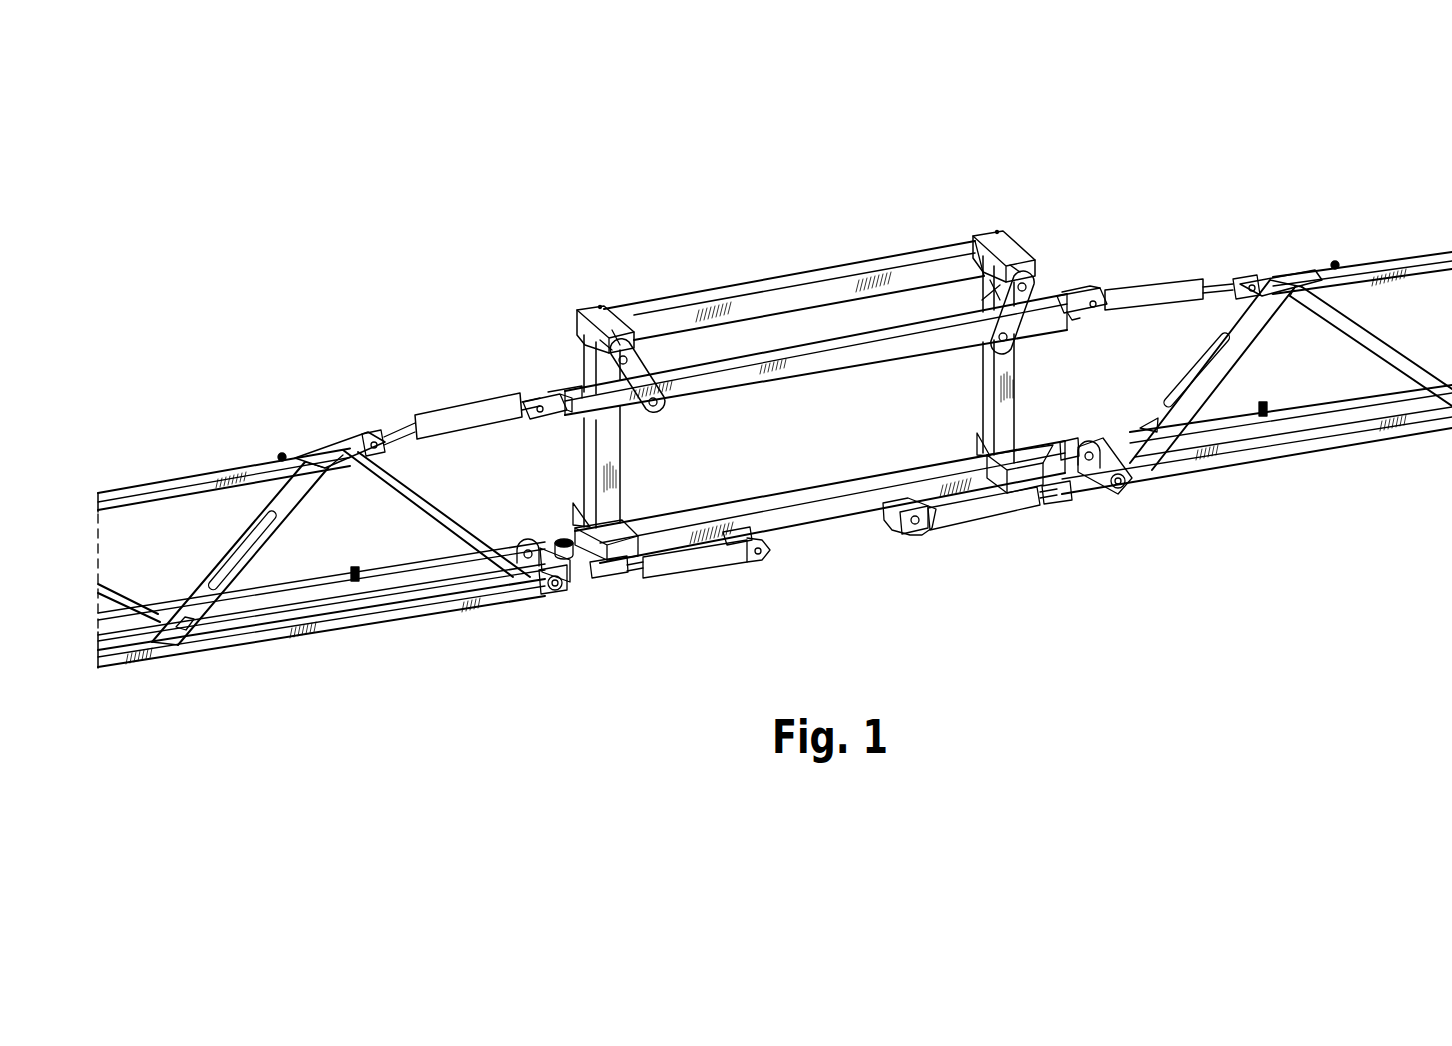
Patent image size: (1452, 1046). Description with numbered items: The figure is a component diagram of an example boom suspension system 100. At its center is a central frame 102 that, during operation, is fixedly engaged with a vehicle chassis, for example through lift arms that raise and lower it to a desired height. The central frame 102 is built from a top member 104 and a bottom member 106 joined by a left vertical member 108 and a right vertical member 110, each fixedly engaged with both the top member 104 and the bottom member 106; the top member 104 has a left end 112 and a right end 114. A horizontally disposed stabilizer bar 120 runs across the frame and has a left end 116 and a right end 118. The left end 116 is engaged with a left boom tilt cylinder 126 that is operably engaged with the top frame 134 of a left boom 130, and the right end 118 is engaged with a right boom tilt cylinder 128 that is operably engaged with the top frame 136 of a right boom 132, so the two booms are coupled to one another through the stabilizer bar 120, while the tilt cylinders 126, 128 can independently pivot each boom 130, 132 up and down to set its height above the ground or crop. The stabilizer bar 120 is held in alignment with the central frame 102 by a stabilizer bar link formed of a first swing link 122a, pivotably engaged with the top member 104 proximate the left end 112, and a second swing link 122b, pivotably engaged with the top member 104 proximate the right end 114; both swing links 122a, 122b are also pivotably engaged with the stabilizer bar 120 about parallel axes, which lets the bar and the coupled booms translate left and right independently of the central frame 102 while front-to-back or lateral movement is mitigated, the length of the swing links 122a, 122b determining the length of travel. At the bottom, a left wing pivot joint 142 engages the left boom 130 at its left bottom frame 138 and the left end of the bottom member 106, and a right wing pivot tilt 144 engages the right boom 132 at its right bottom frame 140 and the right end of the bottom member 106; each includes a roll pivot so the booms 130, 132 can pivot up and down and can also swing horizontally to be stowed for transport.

The boom suspension system 100 is at (1090, 140).
The central frame 102 is at (710, 264).
The top member 104 is at (638, 304).
The bottom member 106 is at (822, 526).
The left vertical member 108 is at (584, 362).
The right vertical member 110 is at (1020, 388).
The left end of top member 112 is at (592, 308).
The right end of top member 114 is at (1002, 238).
The left end of stabilizer bar 116 is at (565, 424).
The right end of stabilizer bar 118 is at (1086, 316).
The stabilizer bar 120 is at (838, 372).
The first swing link 122a is at (658, 414).
The second swing link 122b is at (972, 292).
The left boom tilt cylinder 126 is at (446, 420).
The right boom tilt cylinder 128 is at (1148, 290).
The left boom 130 is at (210, 446).
The right boom 132 is at (1400, 236).
The top frame of left boom 134 is at (244, 462).
The top frame of right boom 136 is at (1334, 264).
The left bottom frame 138 is at (345, 636).
The right truss bottom chord 140 is at (1269, 473).
The left wing pivot joint 142 is at (570, 600).
The right wing pivot tilt 144 is at (1110, 502).